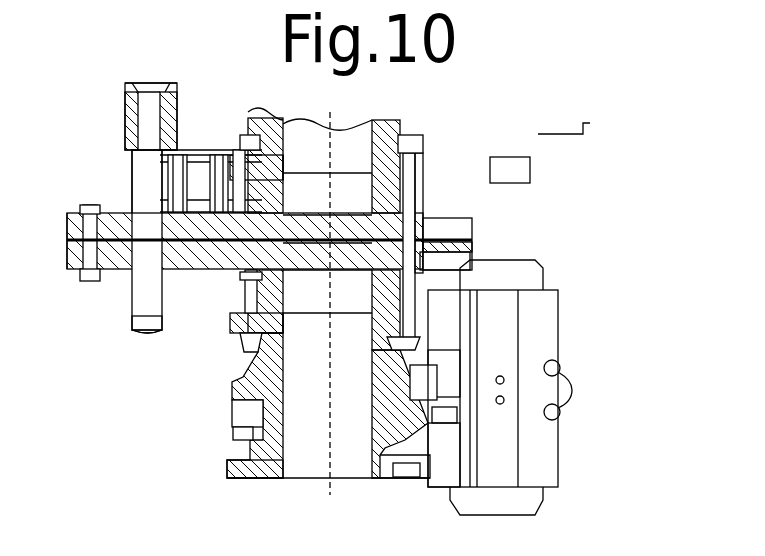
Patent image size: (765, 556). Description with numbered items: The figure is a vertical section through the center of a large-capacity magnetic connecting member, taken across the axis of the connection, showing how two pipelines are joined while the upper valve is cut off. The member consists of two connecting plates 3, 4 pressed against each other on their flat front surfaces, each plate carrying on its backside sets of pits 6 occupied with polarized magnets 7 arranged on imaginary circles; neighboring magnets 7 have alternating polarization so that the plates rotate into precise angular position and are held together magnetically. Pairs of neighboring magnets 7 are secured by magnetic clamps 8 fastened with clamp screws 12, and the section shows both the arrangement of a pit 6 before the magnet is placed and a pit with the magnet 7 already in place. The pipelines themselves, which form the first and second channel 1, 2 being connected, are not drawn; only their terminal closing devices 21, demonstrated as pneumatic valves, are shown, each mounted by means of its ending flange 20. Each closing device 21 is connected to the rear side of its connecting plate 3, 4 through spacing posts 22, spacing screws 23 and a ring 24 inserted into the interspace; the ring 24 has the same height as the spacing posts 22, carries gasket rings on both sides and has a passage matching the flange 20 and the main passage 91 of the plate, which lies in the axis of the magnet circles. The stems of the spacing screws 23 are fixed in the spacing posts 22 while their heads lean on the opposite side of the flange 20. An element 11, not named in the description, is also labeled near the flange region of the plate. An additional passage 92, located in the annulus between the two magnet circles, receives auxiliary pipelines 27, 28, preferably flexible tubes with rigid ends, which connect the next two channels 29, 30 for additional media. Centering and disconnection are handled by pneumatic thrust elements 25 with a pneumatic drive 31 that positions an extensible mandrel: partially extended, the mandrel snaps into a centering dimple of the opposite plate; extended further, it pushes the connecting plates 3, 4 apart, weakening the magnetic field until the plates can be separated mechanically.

The first channel 1 is at (328, 78).
The second channel 2 is at (329, 504).
The first connecting plate 3 is at (85, 206).
The second connecting plate 4 is at (70, 266).
The pit 6 is at (452, 228).
The magnet 7 is at (530, 170).
The magnetic clamp 8 is at (574, 131).
The mounting block 11 is at (470, 264).
The clamp screw 12 is at (132, 180).
The ending flange 20 is at (424, 158).
The closing device 21 is at (262, 113).
The spacing post 22 is at (241, 290).
The spacing screw 23 is at (425, 152).
The ring 24 is at (284, 157).
The pneumatic thrust element 25 is at (192, 176).
The auxiliary pipeline 27 is at (126, 150).
The auxiliary pipeline 28 is at (164, 322).
The channel 29 is at (145, 27).
The channel 30 is at (147, 382).
The pneumatic drive 31 is at (552, 328).
The main passage 91 is at (291, 480).
The additional passage 92 is at (133, 302).